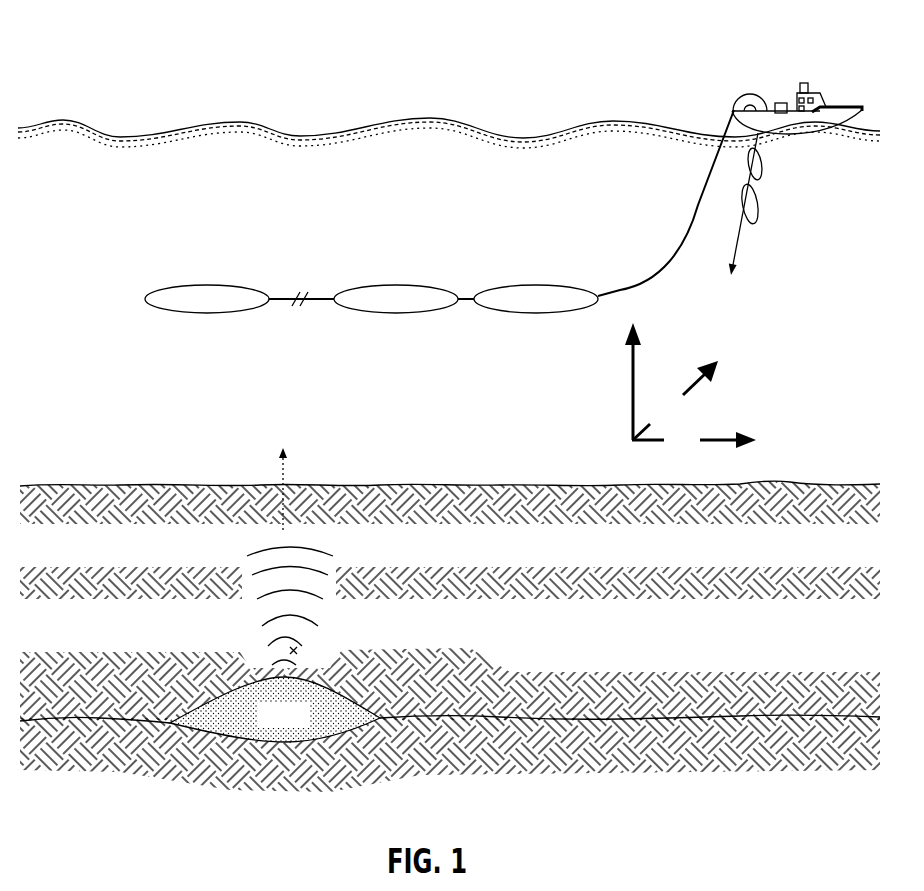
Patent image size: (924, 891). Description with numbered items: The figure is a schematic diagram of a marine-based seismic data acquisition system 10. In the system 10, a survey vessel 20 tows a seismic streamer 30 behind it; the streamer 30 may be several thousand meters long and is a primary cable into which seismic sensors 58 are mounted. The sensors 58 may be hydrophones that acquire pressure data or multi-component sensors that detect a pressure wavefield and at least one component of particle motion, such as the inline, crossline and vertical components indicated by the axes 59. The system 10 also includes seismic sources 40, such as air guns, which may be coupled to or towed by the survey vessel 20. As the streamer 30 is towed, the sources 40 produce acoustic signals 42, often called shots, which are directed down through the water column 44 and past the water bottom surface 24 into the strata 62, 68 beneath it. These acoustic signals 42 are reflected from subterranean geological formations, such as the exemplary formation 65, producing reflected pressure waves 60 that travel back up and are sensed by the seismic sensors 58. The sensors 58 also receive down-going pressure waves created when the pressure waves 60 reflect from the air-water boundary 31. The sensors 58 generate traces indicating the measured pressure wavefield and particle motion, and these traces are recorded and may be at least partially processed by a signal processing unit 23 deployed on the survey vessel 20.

The marine-based seismic data acquisition system 10 is at (224, 84).
The survey vessel 20 is at (855, 105).
The signal processing unit 23 is at (780, 101).
The water bottom surface 24 is at (760, 483).
The seismic streamer 30 is at (700, 205).
The air-water boundary 31 is at (393, 118).
The seismic source 40 is at (764, 167).
The acoustic signal 42 is at (744, 243).
The water column 44 is at (816, 372).
The seismic sensor 58 is at (237, 286).
The axes 59 is at (616, 453).
The pressure waves 60 is at (240, 627).
The stratum 62 is at (452, 692).
The formation 65 is at (294, 726).
The stratum 68 is at (452, 766).